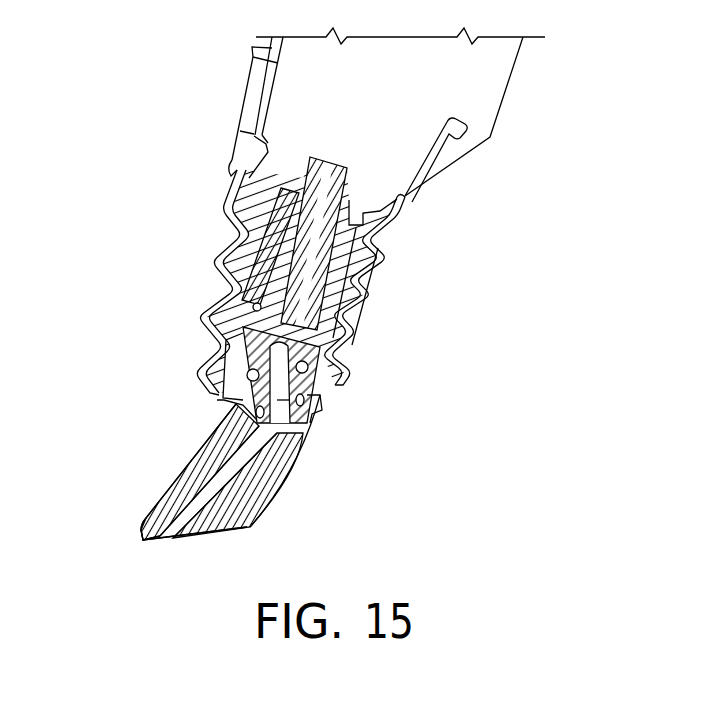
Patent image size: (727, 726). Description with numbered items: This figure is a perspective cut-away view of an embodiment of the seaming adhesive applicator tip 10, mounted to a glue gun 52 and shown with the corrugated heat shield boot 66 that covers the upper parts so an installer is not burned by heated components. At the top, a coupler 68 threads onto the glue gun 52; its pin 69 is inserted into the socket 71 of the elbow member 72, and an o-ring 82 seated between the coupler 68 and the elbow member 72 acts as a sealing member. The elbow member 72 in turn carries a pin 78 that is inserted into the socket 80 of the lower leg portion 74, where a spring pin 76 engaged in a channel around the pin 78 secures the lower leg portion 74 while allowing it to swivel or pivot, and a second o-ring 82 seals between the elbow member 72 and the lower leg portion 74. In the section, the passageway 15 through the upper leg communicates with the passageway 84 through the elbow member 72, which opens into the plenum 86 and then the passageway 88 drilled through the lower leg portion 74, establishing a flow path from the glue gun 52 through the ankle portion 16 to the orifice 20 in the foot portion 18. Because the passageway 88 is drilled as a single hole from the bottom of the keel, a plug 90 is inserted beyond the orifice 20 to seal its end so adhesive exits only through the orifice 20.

The seaming adhesive applicator tip 10 is at (125, 270).
The passageway 15 is at (319, 187).
The ankle portion 16 is at (309, 443).
The foot portion 18 is at (272, 528).
The orifice 20 is at (199, 527).
The glue gun 52 is at (508, 90).
The heat shield boot 66 is at (398, 222).
The coupler 68 is at (380, 250).
The pin 69 is at (366, 294).
The socket 71 is at (275, 237).
The elbow member 72 is at (228, 350).
The lower leg portion 74 is at (225, 432).
The spring pin 76 is at (238, 370).
The pin 78 is at (305, 363).
The socket 80 is at (235, 405).
The o-ring 82 is at (356, 328).
The passageway 84 is at (308, 418).
The plenum 86 is at (300, 455).
The passageway 88 is at (212, 486).
The plug 90 is at (173, 540).